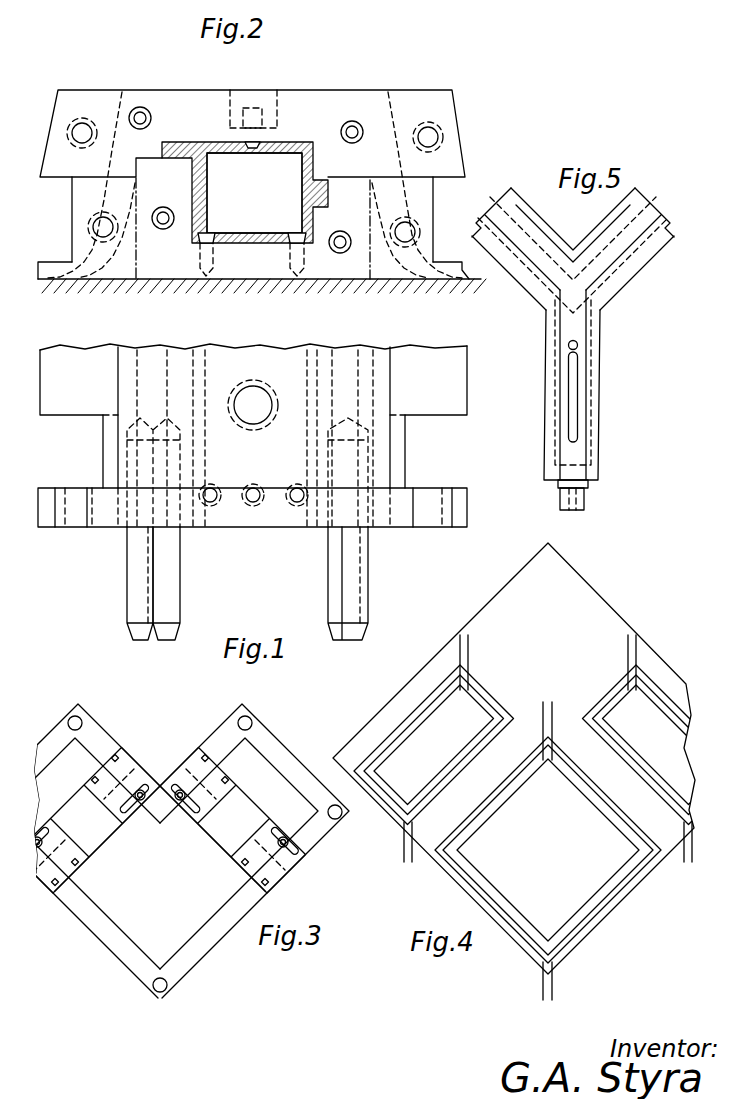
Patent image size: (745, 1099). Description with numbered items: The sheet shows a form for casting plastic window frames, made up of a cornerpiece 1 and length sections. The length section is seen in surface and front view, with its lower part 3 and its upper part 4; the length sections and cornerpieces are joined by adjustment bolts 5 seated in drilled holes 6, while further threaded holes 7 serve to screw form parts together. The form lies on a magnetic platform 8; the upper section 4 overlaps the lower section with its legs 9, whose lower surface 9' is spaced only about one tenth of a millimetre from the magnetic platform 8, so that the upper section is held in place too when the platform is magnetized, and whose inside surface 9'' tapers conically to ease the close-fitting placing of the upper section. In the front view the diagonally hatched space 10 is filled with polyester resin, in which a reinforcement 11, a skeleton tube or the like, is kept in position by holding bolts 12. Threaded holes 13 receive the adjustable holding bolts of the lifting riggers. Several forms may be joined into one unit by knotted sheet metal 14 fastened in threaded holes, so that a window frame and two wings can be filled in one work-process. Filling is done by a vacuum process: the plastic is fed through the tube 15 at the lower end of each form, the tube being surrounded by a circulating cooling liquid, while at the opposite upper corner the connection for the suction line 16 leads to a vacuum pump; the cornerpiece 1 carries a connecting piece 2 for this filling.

In FIG. 5, the cornerpiece 1 is at (528, 288).
In FIG. 5, the connecting piece 2 is at (598, 470).
In FIG. 2, the lower part 3 is at (160, 270).
In FIG. 2, the upper part 4 is at (127, 98).
In FIG. 1, the upper part 4 is at (453, 375).
In FIG. 1, the adjustment bolts 5 is at (170, 578).
In FIG. 2, the drilled holes 6 is at (140, 118).
In FIG. 2, the threaded holes 7 is at (82, 133).
In FIG. 1, the threaded holes 7 is at (425, 515).
In FIG. 2, the magnetic platform 8 is at (452, 282).
In FIG. 2, the legs 9 is at (252, 185).
In FIG. 2, the lower surface 9' is at (253, 295).
In FIG. 2, the inside surface 9'' is at (253, 255).
In FIG. 2, the space 10 is at (318, 197).
In FIG. 2, the reinforcement 11 is at (285, 175).
In FIG. 2, the holding bolts 12 is at (251, 108).
In FIG. 1, the holding bolts 12 is at (295, 505).
In FIG. 1, the threaded holes 13 is at (257, 398).
In FIG. 3, the knotted sheet metal 14 is at (117, 797).
In FIG. 5, the tube 15 is at (584, 500).
In FIG. 4, the tube 15 is at (410, 862).
In FIG. 4, the connection for the suction line 16 is at (463, 633).